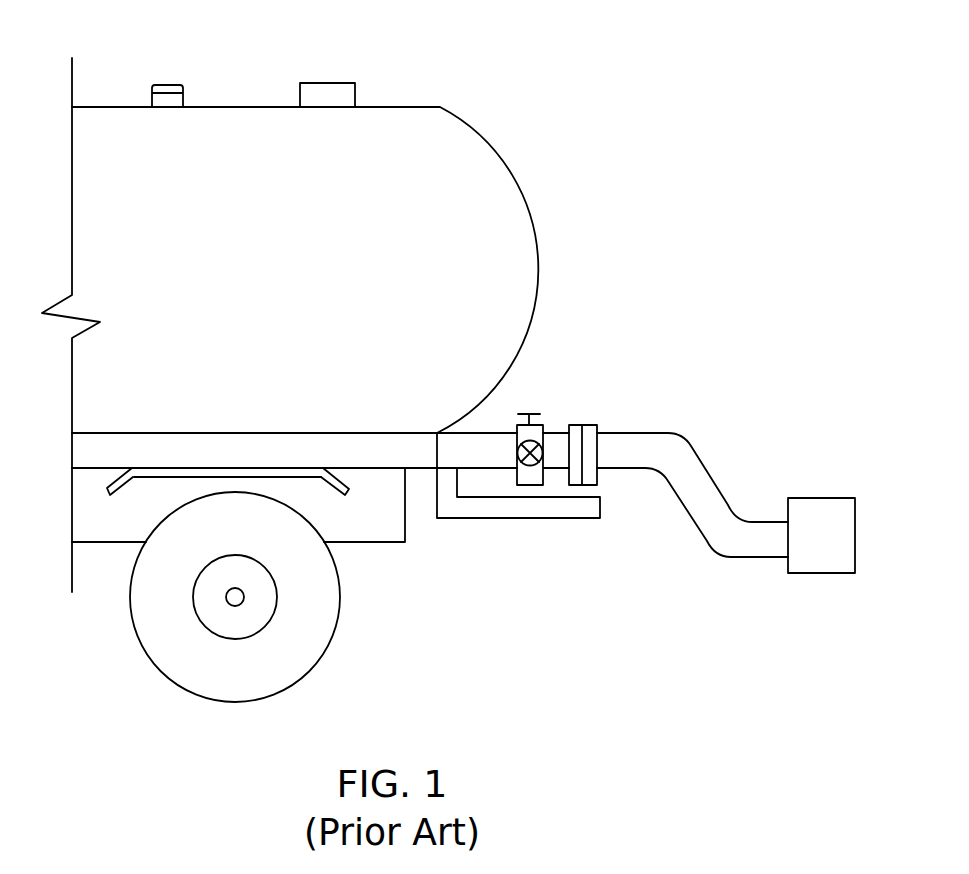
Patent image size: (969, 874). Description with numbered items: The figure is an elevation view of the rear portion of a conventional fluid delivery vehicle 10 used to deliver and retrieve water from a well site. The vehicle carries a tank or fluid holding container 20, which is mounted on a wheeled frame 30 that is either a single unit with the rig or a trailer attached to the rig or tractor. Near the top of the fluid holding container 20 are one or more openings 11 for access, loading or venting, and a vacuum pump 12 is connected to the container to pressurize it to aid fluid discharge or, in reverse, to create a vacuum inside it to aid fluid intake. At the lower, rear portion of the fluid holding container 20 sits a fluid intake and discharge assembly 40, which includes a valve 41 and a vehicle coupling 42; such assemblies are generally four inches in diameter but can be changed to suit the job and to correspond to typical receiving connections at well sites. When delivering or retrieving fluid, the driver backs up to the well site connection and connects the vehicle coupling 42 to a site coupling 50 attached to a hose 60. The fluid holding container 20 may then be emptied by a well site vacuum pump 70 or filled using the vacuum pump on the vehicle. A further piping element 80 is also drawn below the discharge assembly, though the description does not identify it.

The fluid delivery vehicle 10 is at (588, 78).
The opening 11 is at (168, 84).
The vacuum pump 12 is at (327, 82).
The fluid holding container 20 is at (342, 226).
The wheeled frame 30 is at (353, 455).
The fluid intake and discharge assembly 40 is at (549, 388).
The valve 41 is at (536, 432).
The vehicle coupling 42 is at (586, 429).
The site coupling 50 is at (590, 473).
The hose 60 is at (738, 540).
The vacuum pump 70 is at (822, 498).
The bypass pipe 80 is at (500, 507).